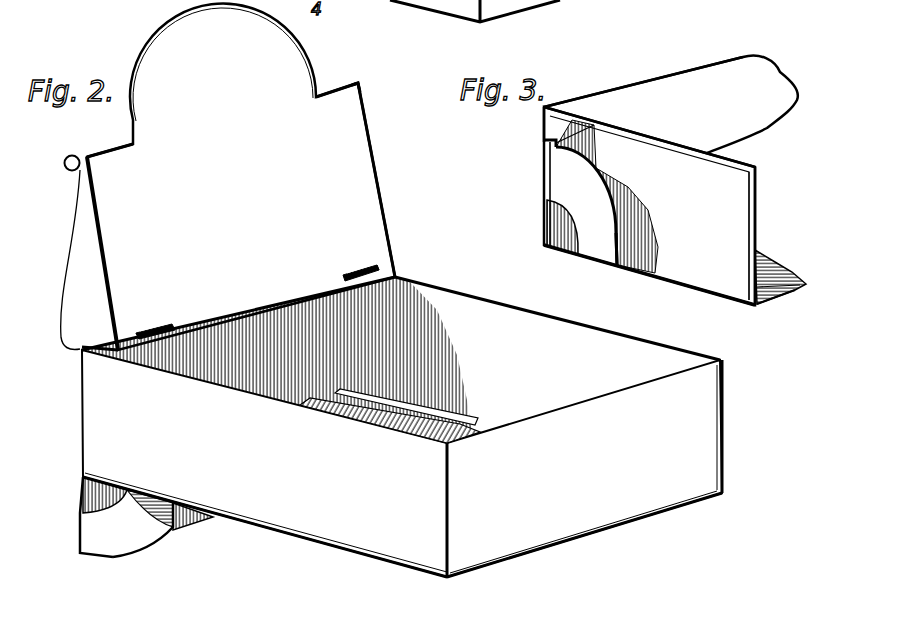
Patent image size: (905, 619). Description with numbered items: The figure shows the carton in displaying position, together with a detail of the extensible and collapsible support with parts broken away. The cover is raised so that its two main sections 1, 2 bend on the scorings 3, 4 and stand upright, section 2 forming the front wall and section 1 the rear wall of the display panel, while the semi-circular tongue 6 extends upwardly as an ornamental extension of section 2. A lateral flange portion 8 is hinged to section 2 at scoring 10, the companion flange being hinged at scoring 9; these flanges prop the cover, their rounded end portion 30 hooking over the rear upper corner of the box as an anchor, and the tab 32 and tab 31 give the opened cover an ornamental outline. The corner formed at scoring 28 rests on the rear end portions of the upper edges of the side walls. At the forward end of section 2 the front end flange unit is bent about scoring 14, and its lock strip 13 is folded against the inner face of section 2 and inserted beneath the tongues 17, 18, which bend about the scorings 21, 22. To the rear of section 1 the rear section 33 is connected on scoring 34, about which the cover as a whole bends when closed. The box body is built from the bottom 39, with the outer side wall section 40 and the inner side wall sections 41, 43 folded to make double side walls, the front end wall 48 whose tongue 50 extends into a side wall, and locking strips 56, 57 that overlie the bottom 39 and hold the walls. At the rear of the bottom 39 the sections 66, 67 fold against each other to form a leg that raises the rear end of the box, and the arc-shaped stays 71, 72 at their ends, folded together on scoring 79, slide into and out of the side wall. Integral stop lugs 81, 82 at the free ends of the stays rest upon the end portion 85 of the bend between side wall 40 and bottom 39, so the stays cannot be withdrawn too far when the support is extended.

In FIG. 3, the cover section 1 is at (671, 104).
In FIG. 2, the cover section 2 is at (241, 177).
In FIG. 2, the scoring 3 is at (327, 92).
In FIG. 2, the scoring 4 is at (111, 151).
In FIG. 2, the tongue 6 is at (222, 56).
In FIG. 2, the flange portion 8 is at (76, 279).
In FIG. 2, the scoring 9 is at (374, 163).
In FIG. 2, the scoring 10 is at (100, 224).
In FIG. 2, the lock strip 13 is at (170, 327).
In FIG. 2, the scoring 14 is at (258, 310).
In FIG. 2, the tongue 17 is at (146, 332).
In FIG. 2, the tongue 18 is at (373, 267).
In FIG. 2, the scoring 21 is at (153, 327).
In FIG. 2, the scoring 22 is at (352, 273).
In FIG. 2, the scoring 28 is at (97, 353).
In FIG. 2, the rounded end portion 30 is at (62, 345).
In FIG. 2, the tab 31 is at (356, 82).
In FIG. 2, the tab 32 is at (66, 158).
In FIG. 2, the rear section 33 is at (245, 390).
In FIG. 3, the scoring 34 is at (666, 76).
In FIG. 2, the bottom section 39 is at (440, 423).
In FIG. 3, the bottom section 39 is at (780, 258).
In FIG. 2, the side wall section 40 is at (264, 463).
In FIG. 3, the side wall section 40 is at (649, 206).
In FIG. 3, the side wall section 41 is at (567, 112).
In FIG. 2, the side wall section 43 is at (557, 318).
In FIG. 2, the front end wall section 48 is at (584, 468).
In FIG. 3, the tongue 50 is at (543, 128).
In FIG. 3, the locking strip 56 is at (771, 298).
In FIG. 2, the locking strip 57 is at (487, 417).
In FIG. 2, the support section 66 is at (200, 521).
In FIG. 2, the support section 67 is at (83, 493).
In FIG. 2, the stay 71 is at (130, 543).
In FIG. 3, the stay 71 is at (545, 190).
In FIG. 2, the stay 72 is at (174, 529).
In FIG. 3, the stay 72 is at (606, 176).
In FIG. 2, the scoring 79 is at (80, 532).
In FIG. 3, the scoring 79 is at (592, 262).
In FIG. 3, the stop lug 81 is at (543, 145).
In FIG. 3, the stop lug 82 is at (557, 143).
In FIG. 3, the end portion of bend 85 is at (637, 273).